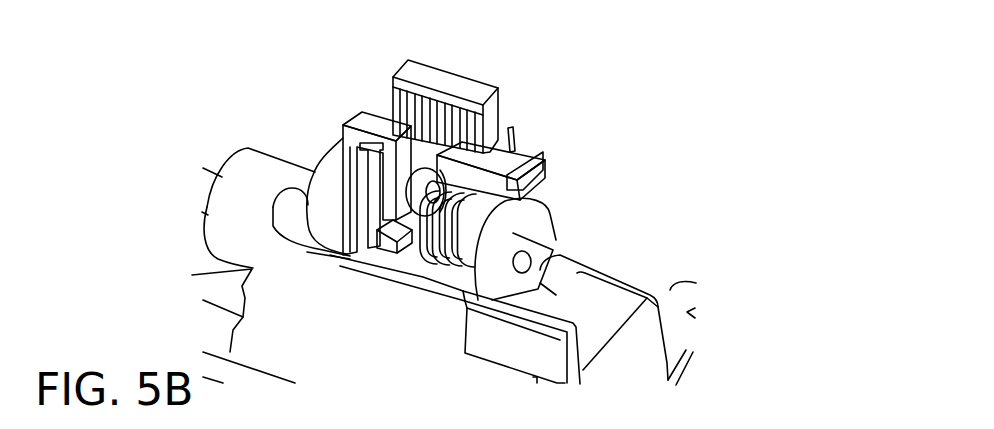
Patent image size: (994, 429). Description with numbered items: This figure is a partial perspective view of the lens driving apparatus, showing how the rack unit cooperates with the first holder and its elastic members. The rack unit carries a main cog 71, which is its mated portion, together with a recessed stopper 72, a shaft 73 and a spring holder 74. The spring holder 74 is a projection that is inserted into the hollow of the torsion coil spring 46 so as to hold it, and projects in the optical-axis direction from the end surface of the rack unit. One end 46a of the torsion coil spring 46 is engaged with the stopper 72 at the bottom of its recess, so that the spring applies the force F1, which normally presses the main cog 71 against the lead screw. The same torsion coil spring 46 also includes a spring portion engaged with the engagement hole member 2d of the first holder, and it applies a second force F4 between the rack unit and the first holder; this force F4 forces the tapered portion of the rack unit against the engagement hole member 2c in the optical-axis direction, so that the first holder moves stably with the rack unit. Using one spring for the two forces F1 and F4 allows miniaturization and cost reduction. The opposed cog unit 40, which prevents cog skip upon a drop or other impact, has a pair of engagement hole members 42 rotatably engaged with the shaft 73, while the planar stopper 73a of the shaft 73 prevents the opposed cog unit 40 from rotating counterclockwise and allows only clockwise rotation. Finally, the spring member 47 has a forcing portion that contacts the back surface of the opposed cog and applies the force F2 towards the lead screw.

The engagement hole member 2c is at (328, 207).
The engagement hole member 2d is at (520, 273).
The opposed cog unit 40 is at (363, 110).
The engagement hole member 42 is at (373, 260).
The torsion coil spring 46 is at (455, 232).
The one end of the torsion coil spring 46a is at (511, 128).
The spring member 47 is at (300, 238).
The main cog 71 is at (423, 75).
The stopper 72 is at (546, 157).
The shaft 73 is at (434, 193).
The stopper 73a is at (440, 147).
The spring holder 74 is at (430, 248).
The force F1 is at (528, 140).
The second force F2 is at (342, 92).
The force F4 is at (405, 265).